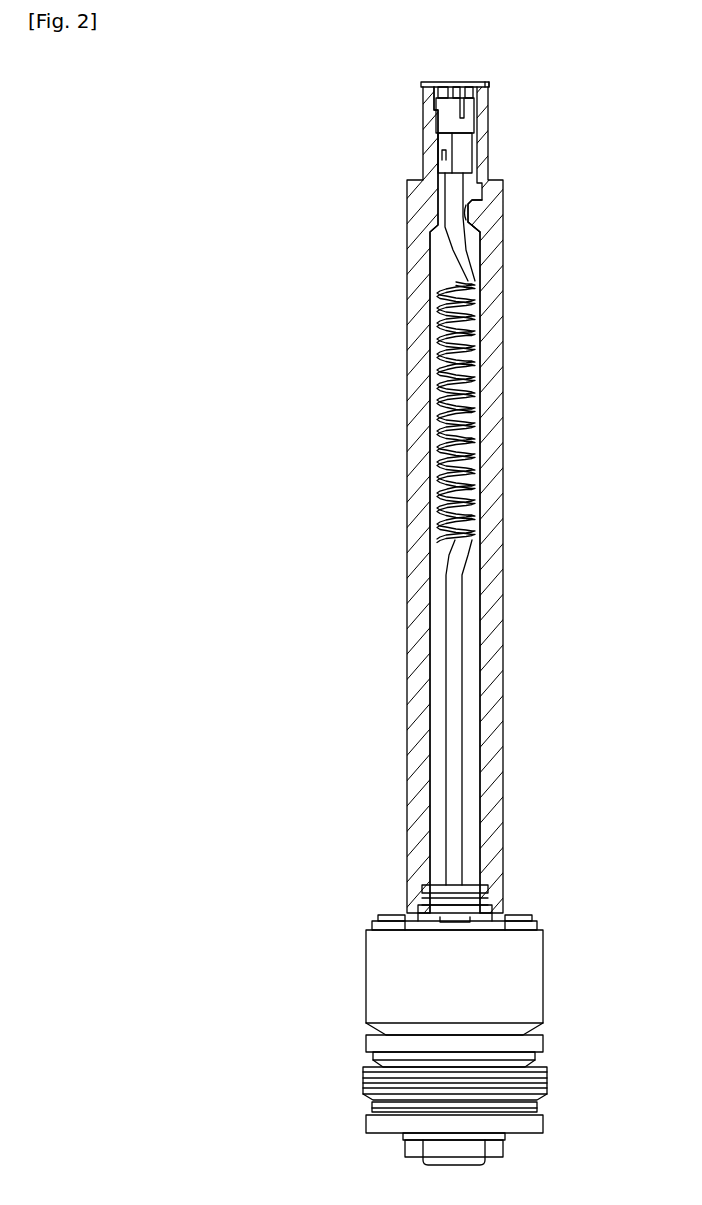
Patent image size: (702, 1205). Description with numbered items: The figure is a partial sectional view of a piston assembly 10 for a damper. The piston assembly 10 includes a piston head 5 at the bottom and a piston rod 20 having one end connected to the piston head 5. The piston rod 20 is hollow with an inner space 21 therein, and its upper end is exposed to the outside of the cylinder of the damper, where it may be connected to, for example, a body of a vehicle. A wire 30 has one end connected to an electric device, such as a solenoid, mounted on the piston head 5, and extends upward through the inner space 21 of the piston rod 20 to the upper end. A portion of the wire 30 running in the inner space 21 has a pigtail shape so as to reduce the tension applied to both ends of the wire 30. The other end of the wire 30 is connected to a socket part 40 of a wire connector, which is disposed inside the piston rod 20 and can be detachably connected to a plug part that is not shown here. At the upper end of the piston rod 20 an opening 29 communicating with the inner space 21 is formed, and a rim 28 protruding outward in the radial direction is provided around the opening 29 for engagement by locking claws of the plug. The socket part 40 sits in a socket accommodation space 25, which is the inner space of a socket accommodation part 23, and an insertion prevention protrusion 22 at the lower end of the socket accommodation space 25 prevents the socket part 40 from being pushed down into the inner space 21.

The piston assembly 10 is at (603, 305).
The piston rod 20 is at (503, 744).
The inner space 21 is at (439, 706).
The insertion prevention protrusion 22 is at (473, 208).
The socket accommodation part 23 is at (489, 149).
The socket accommodation space 25 is at (470, 189).
The rim 28 is at (486, 82).
The opening 29 is at (447, 82).
The wire 30 is at (460, 627).
The socket part 40 is at (478, 118).
The piston head 5 is at (555, 972).